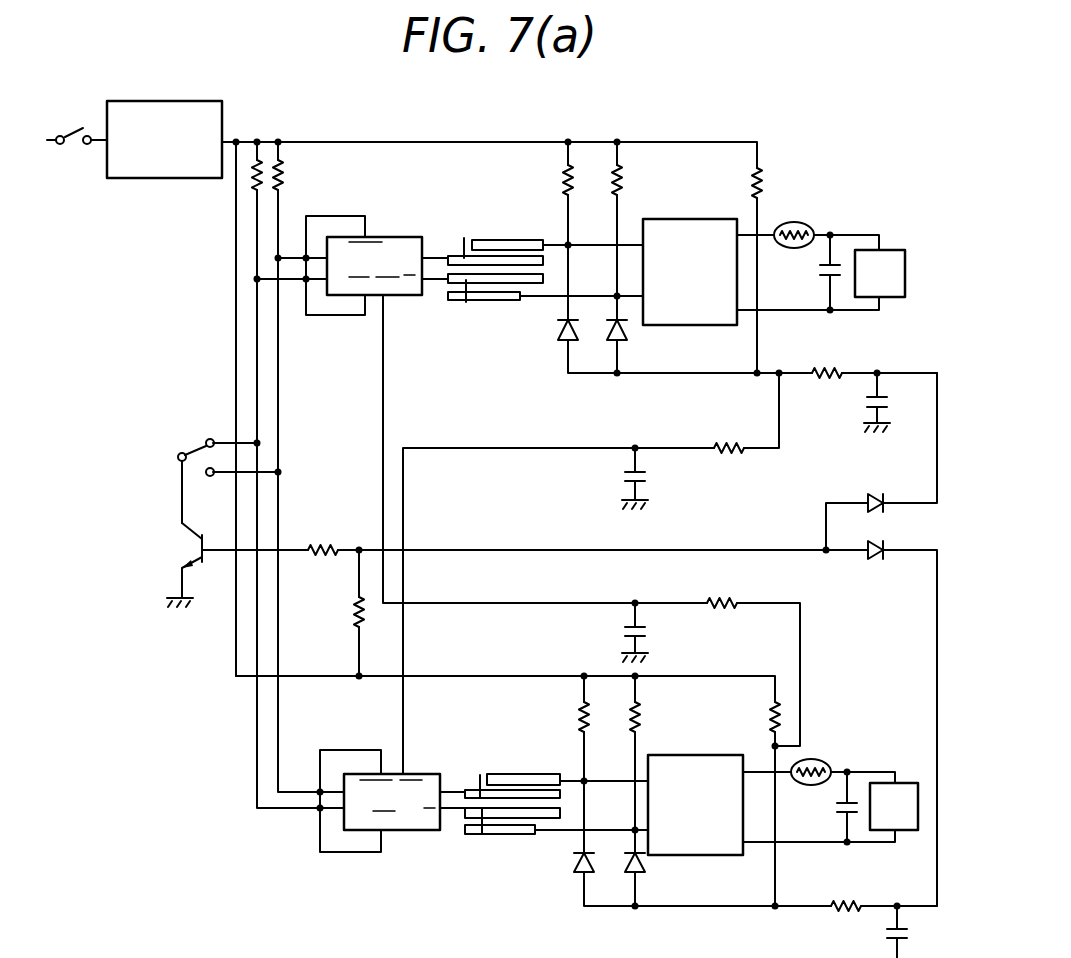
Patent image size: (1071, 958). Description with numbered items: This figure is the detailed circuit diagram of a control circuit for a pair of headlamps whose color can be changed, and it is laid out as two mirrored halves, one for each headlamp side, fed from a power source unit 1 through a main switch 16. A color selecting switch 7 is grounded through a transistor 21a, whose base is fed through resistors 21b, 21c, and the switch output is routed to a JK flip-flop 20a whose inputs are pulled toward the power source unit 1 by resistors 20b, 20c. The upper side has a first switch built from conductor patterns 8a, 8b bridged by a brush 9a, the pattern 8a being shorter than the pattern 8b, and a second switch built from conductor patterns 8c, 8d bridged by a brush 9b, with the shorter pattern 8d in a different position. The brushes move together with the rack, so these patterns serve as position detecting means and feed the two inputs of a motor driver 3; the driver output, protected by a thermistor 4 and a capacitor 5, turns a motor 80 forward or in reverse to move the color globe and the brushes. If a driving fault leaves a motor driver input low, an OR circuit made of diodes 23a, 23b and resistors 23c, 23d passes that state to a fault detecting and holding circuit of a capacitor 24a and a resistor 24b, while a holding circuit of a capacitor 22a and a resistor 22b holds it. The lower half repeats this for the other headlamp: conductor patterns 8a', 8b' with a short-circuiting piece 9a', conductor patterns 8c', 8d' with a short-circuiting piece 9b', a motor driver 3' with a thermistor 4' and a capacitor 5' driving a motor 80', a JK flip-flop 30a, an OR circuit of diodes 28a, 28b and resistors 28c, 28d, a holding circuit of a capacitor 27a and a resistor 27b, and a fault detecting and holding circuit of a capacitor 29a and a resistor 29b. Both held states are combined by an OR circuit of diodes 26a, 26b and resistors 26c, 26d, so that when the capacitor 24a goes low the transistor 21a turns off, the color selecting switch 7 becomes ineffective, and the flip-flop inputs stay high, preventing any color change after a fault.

The power source unit 1 is at (190, 101).
The power switch 16 is at (82, 125).
The JK flip-flop 20a is at (378, 238).
The resistor 20b is at (252, 172).
The resistor 20c is at (293, 176).
The conductor pattern 8a is at (507, 226).
The conductor pattern 8b is at (487, 233).
The conductor pattern 8c is at (474, 311).
The conductor pattern 8d is at (490, 313).
The brush 9a is at (483, 230).
The brush 9b is at (469, 314).
The diode 23a is at (560, 330).
The diode 23b is at (619, 326).
The resistor 23c is at (566, 186).
The resistor 23d is at (619, 187).
The motor driver 3 is at (690, 256).
The resistor 26c is at (763, 188).
The thermistor 4 is at (796, 217).
The capacitor 5 is at (808, 273).
The motor 80 is at (888, 256).
The capacitor 24a is at (866, 401).
The resistor 24b is at (824, 367).
The capacitor 22a is at (646, 483).
The resistor 22b is at (721, 456).
The diode 26a is at (871, 500).
The diode 26b is at (876, 552).
The color selecting switch 7 is at (194, 448).
The transistor 21a is at (178, 549).
The resistor 21b is at (320, 544).
The resistor 21c is at (356, 612).
The capacitor 27a is at (646, 625).
The resistor 27b is at (728, 601).
The diode 28a is at (575, 862).
The diode 28b is at (640, 868).
The resistor 28c is at (581, 716).
The resistor 28d is at (645, 720).
The resistor 26d is at (770, 722).
The motor driver 3' is at (698, 789).
The thermistor 4' is at (813, 754).
The capacitor 5' is at (826, 812).
The motor 80' is at (898, 787).
The JK flip-flop 30a is at (412, 774).
The conductor pattern 8a' is at (529, 764).
The conductor pattern 8b' is at (505, 769).
The conductor pattern 8c' is at (545, 804).
The conductor pattern 8d' is at (488, 846).
The short-circuiting piece 9a' is at (484, 755).
The short-circuiting piece 9b' is at (507, 838).
The capacitor 29a is at (882, 931).
The resistor 29b is at (848, 905).